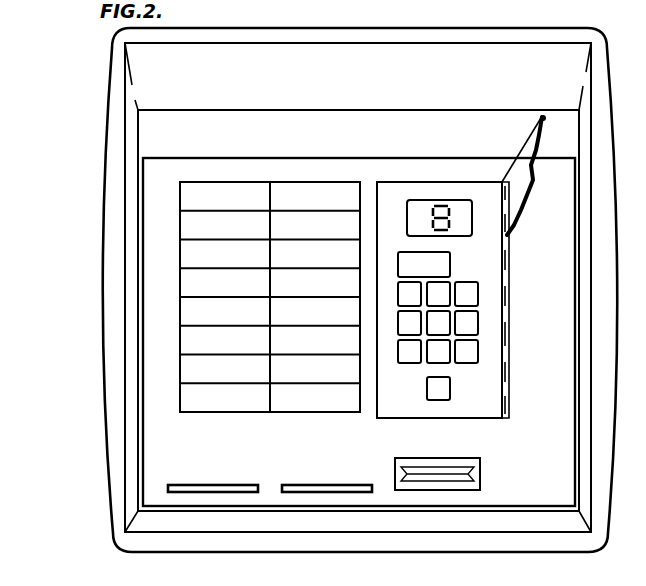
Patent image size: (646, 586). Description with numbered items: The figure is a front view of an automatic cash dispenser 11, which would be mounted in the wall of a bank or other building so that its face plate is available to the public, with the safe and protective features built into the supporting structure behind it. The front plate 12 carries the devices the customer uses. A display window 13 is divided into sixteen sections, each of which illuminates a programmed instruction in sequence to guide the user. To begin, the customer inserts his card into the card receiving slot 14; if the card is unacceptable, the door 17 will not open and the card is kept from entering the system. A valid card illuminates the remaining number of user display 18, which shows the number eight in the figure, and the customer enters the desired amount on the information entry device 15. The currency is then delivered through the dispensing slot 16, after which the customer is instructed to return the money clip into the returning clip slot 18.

The automatic cash dispenser 11 is at (557, 27).
The front plate 12 is at (302, 453).
The display window 13 is at (206, 412).
The card receiving slot 14 is at (480, 476).
The information entry device 15 is at (495, 321).
The dispensing slot 16 is at (218, 484).
The door 17 is at (528, 207).
The remaining number of user display 18 is at (472, 226).